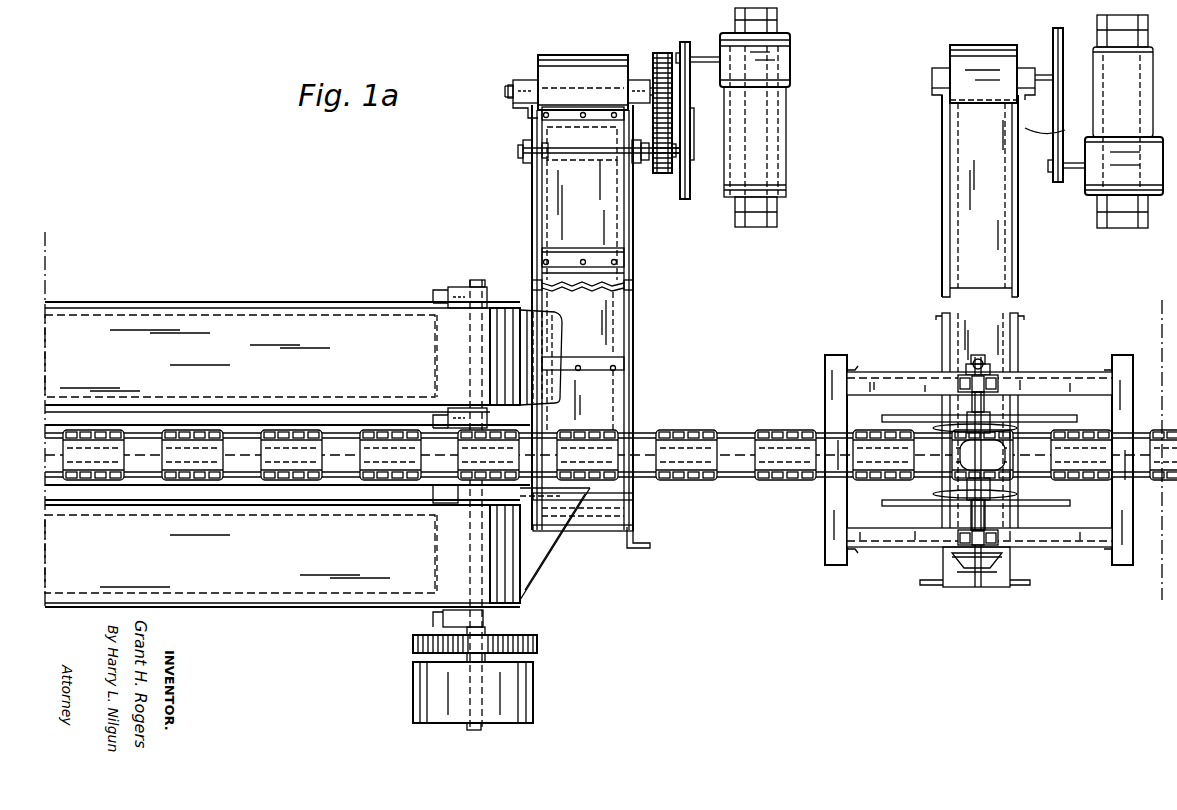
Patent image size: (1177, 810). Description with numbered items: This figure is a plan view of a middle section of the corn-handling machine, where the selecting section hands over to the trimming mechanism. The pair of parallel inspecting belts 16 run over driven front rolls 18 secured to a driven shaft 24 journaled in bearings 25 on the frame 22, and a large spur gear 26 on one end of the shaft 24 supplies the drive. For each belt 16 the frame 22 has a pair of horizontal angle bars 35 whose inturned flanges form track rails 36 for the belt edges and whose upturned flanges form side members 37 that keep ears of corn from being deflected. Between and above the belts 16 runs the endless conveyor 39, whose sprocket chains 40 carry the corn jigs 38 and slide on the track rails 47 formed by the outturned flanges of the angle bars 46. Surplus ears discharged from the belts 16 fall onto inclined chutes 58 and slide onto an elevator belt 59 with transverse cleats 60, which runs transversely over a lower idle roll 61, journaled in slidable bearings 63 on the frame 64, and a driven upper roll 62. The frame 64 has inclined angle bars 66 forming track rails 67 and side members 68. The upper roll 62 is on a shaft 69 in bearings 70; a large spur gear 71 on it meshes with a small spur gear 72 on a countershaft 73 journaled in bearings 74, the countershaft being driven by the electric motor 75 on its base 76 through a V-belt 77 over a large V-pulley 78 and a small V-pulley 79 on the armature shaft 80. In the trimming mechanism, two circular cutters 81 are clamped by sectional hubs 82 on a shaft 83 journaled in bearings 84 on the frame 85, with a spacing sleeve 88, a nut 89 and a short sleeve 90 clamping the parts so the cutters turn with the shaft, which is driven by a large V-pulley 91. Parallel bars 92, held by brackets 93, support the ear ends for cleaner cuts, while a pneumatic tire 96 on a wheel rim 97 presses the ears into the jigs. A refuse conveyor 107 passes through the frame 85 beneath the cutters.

The inspecting belt 16 is at (240, 454).
The driven front roll 18 is at (508, 308).
The frame 22 is at (433, 296).
The driven shaft 24 is at (472, 730).
The bearing 25 is at (462, 287).
The large spur gear 26 is at (538, 646).
The angle bar 35 is at (75, 302).
The track rail 36 is at (135, 307).
The side member 37 is at (180, 306).
The corn jig 38 is at (290, 430).
The conveyor 39 is at (138, 440).
The sprocket chain 40 is at (240, 470).
The angle bar 46 is at (648, 433).
The track rail 47 is at (222, 433).
The chute 58 is at (562, 350).
The elevator belt 59 is at (608, 340).
The transverse cleat 60 is at (624, 362).
The lower idle roll 61 is at (634, 510).
The driven upper roll 62 is at (538, 68).
The bearing 63 is at (634, 497).
The frame 64 is at (528, 113).
The inclined angle bar 66 is at (633, 275).
The track rail 67 is at (633, 288).
The side member 68 is at (532, 223).
The shaft 69 is at (505, 94).
The bearing 70 is at (513, 85).
The large spur gear 71 is at (663, 53).
The small spur gear 72 is at (666, 173).
The countershaft 73 is at (518, 152).
The bearing 74 is at (523, 160).
The electric motor 75 is at (790, 72).
The base 76 is at (777, 25).
The V-belt 77 is at (694, 112).
The large V-pulley 78 is at (690, 188).
The small V-pulley 79 is at (680, 53).
The armature shaft 80 is at (705, 57).
The circular cutter 81 is at (1000, 428).
The sectional hub 82 is at (986, 510).
The shaft 83 is at (985, 357).
The bearing 84 is at (998, 382).
The frame 85 is at (873, 378).
The spacing sleeve 88 is at (990, 402).
The nut 89 is at (970, 364).
The short sleeve 90 is at (966, 368).
The large V-pulley 91 is at (943, 568).
The bar 92 is at (1084, 414).
The bracket 93 is at (915, 422).
The pneumatic tire 96 is at (1014, 460).
The wheel rim 97 is at (1096, 508).
The refuse conveyor 107 is at (940, 250).